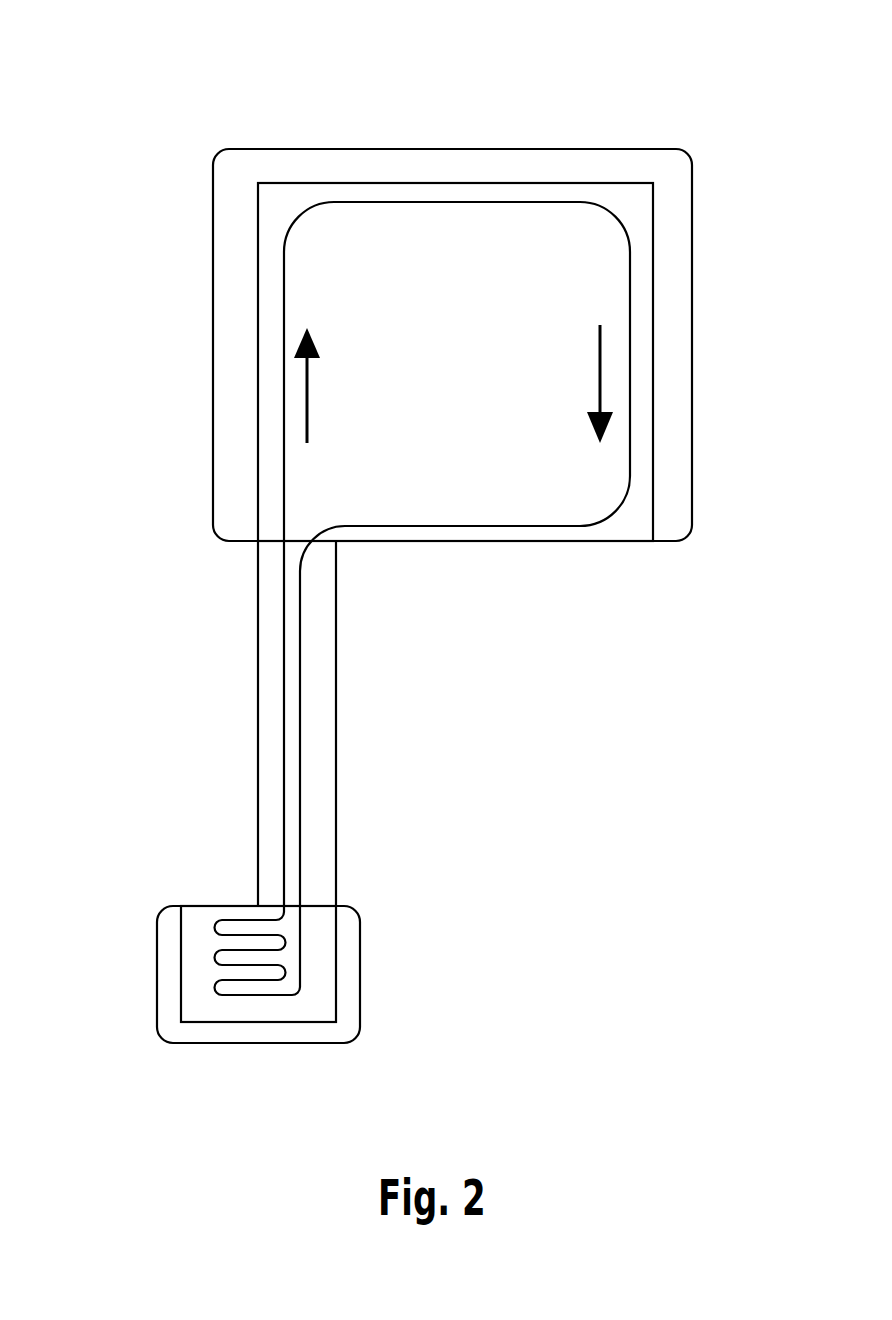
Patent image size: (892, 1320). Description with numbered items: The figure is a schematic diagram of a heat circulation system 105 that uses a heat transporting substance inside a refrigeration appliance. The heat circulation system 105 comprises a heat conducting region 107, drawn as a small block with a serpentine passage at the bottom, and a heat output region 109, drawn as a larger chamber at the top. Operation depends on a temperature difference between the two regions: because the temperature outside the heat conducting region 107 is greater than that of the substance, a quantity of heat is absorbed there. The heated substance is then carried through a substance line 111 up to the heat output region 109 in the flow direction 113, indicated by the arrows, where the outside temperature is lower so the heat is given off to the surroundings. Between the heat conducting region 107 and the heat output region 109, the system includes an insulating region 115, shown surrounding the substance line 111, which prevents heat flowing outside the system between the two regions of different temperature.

The heat circulation system 105 is at (605, 112).
The heat conducting region 107 is at (360, 967).
The heat output region 109 is at (692, 343).
The substance line 111 is at (284, 778).
The flow direction 113 is at (600, 348).
The insulating region 115 is at (258, 697).